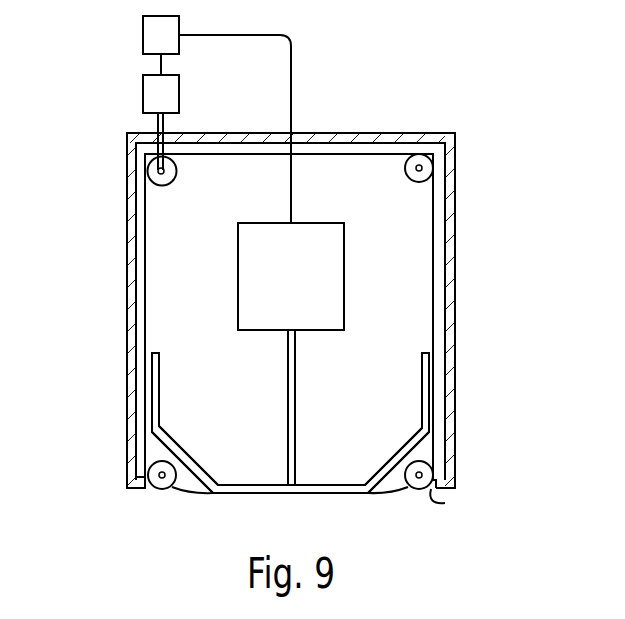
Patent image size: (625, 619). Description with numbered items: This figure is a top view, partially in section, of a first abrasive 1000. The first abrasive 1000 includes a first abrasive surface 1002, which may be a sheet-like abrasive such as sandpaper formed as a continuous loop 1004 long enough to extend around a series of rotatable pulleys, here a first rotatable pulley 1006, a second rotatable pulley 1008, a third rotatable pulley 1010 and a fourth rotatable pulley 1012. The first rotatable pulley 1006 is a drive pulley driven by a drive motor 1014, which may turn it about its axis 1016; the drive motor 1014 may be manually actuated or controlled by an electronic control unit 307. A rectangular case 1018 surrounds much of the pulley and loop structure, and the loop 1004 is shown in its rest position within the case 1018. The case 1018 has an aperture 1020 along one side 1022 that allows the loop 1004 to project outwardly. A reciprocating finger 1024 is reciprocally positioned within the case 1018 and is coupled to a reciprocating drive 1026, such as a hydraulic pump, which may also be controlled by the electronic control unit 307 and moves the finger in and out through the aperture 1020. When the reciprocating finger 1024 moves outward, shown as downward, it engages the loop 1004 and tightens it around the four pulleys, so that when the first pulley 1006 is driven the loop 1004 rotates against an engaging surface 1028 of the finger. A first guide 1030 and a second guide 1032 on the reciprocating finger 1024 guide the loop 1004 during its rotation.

The electronic control unit 307 is at (142, 33).
The drive motor 1014 is at (142, 100).
The axis 1016 is at (157, 172).
The first rotatable pulley 1006 is at (157, 180).
The continuous loop 1004 is at (390, 154).
The second rotatable pulley 1008 is at (433, 170).
The reciprocating drive 1026 is at (328, 222).
The case 1018 is at (452, 330).
The first guide 1030 is at (155, 402).
The second guide 1032 is at (432, 400).
The reciprocating finger 1024 is at (325, 485).
The third rotatable pulley 1010 is at (430, 472).
The aperture 1020 is at (445, 503).
The side 1022 is at (133, 495).
The fourth rotatable pulley 1012 is at (160, 483).
The first abrasive surface 1002 is at (238, 495).
The engaging surface 1028 is at (333, 492).
The first abrasive 1000 is at (396, 501).